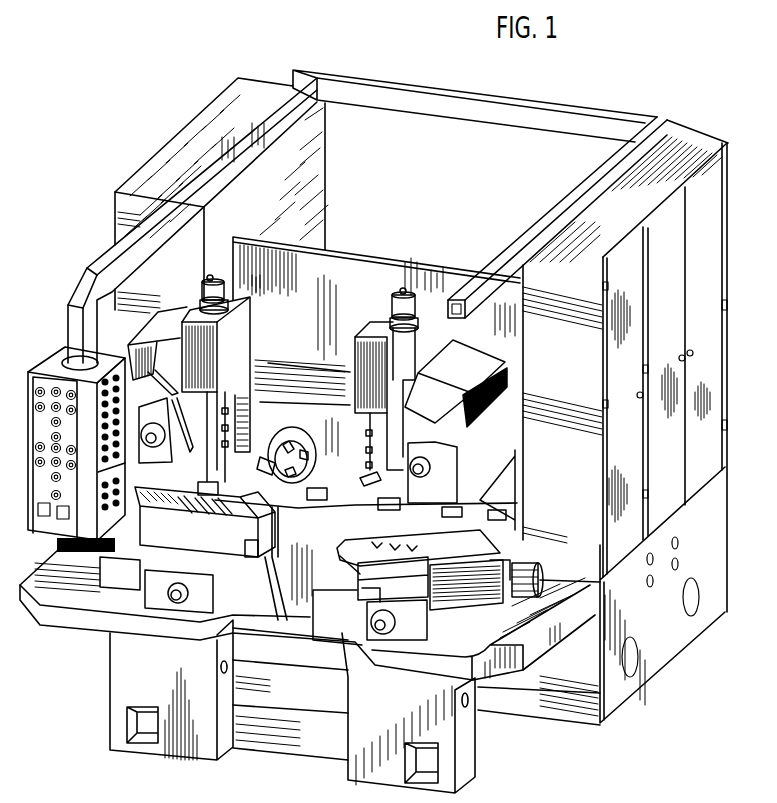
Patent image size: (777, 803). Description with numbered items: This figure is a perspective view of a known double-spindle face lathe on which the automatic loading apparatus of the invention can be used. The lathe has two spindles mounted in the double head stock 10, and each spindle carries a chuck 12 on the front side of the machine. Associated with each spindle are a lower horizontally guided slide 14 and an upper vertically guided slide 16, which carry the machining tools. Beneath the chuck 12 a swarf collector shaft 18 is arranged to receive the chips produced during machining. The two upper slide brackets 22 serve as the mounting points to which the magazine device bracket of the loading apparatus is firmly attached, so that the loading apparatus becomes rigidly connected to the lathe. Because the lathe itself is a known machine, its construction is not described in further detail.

The double head stock 10 is at (287, 367).
The chuck 12 is at (308, 470).
The lower horizontally guided slide 14 is at (172, 510).
The upper vertically guided slide 16 is at (232, 397).
The swarf collector shaft 18 is at (255, 650).
The upper slide brackets 22 is at (478, 465).